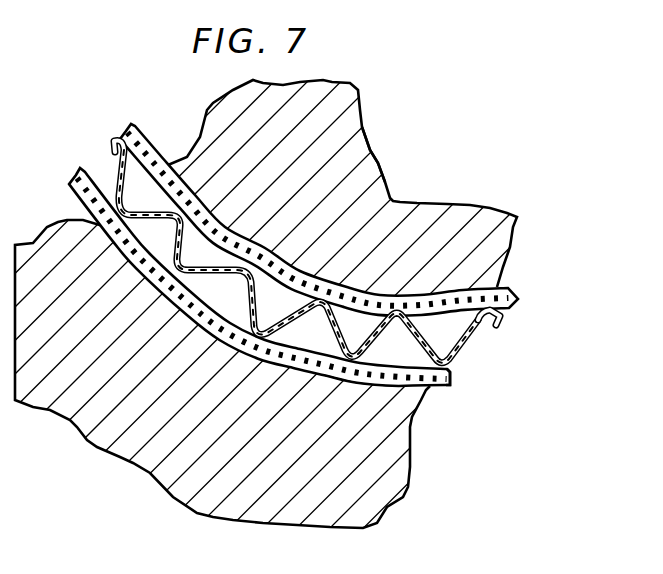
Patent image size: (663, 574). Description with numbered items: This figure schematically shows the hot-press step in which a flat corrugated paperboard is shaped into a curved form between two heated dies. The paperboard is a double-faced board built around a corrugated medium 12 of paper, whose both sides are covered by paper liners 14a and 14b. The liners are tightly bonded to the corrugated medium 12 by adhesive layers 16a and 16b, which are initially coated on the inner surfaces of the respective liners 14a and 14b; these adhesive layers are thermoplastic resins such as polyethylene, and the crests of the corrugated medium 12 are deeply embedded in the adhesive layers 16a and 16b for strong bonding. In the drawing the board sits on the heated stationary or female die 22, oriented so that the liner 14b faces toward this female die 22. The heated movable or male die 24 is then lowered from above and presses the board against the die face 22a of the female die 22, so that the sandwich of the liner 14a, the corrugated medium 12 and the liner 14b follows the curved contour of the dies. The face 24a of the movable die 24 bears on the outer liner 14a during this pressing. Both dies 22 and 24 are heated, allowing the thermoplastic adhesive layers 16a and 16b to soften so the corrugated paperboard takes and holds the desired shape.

The corrugated medium 12 is at (466, 338).
The liner 14a is at (510, 288).
The liner 14b is at (405, 386).
The adhesive layer 16a is at (480, 328).
The adhesive layer 16b is at (450, 384).
The stationary or female die 22 is at (153, 460).
The die face 22a is at (360, 385).
The movable or male die 24 is at (410, 226).
The outer support surface 24a is at (300, 235).